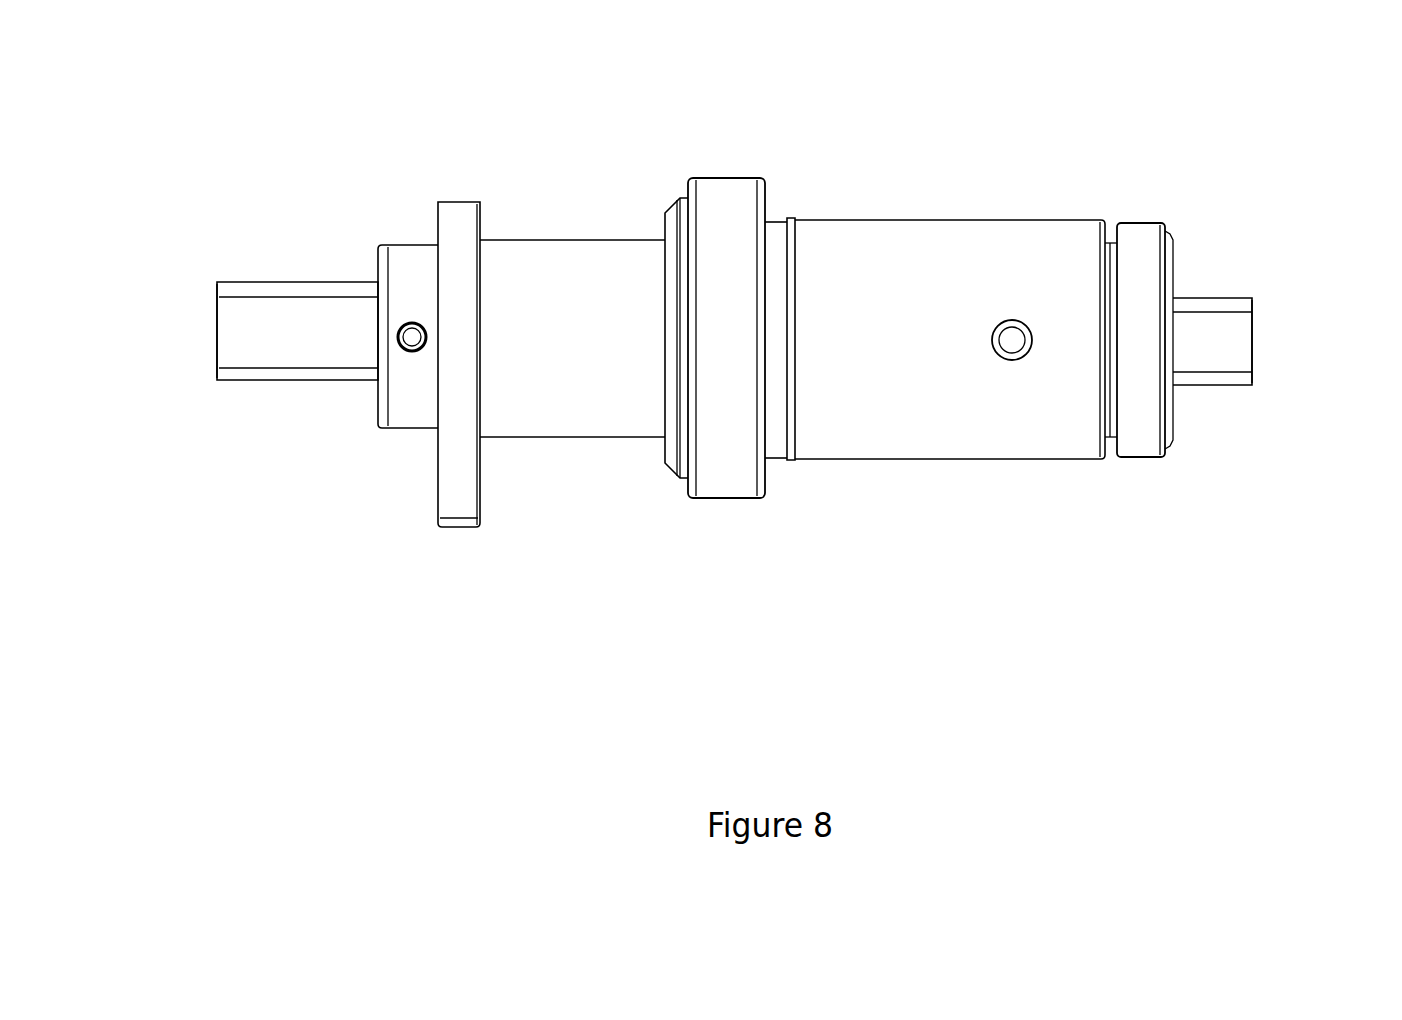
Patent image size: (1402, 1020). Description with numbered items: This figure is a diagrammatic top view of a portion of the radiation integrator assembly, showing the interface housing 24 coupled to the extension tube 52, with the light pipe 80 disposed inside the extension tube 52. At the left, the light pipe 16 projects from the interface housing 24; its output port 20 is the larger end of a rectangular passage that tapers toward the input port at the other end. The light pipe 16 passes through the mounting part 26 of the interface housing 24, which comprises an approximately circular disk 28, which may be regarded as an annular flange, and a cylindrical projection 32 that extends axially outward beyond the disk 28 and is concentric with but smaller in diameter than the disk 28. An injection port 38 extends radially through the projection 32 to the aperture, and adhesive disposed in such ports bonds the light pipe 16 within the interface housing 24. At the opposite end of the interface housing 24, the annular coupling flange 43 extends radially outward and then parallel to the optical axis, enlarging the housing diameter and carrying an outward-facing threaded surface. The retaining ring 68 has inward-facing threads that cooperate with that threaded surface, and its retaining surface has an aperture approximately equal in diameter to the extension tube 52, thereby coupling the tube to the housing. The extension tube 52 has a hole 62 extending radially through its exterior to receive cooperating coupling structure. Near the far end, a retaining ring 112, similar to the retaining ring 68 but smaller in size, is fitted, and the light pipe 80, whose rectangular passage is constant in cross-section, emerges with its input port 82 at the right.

The light pipe 16 is at (280, 278).
The output port 20 is at (203, 350).
The interface housing 24 is at (577, 235).
The mounting part 26 is at (452, 194).
The disk 28 is at (452, 498).
The cylindrical projection 32 is at (408, 403).
The injection port 38 is at (410, 352).
The annular coupling flange 43 is at (673, 433).
The extension tube 52 is at (892, 217).
The hole 62 is at (1000, 327).
The retaining ring 68 is at (733, 177).
The light pipe 80 is at (1222, 296).
The input port 82 is at (1266, 355).
The retaining ring 112 is at (1138, 223).